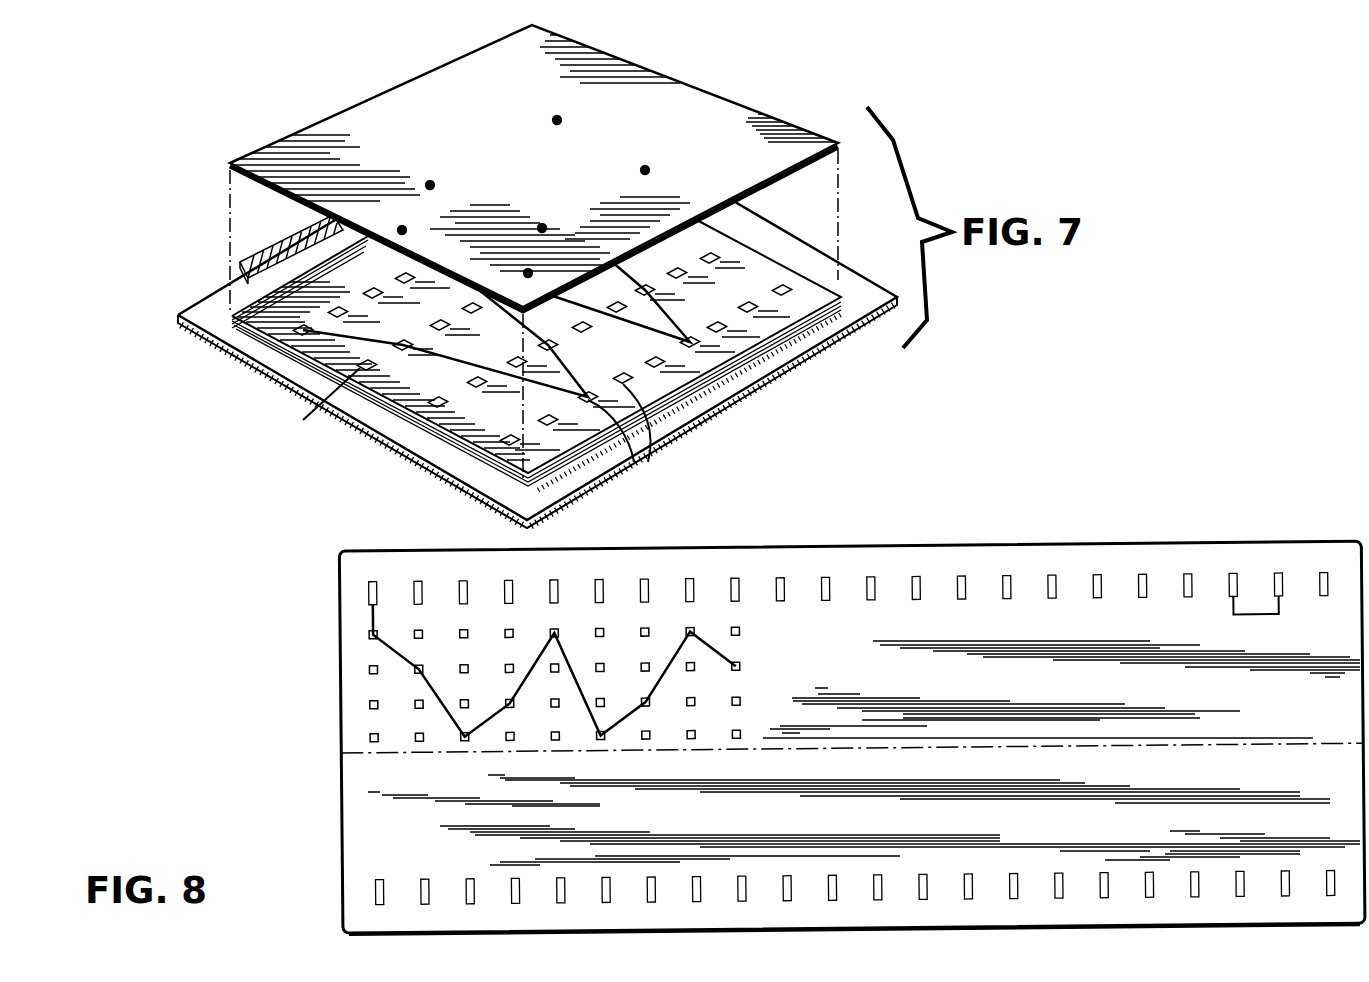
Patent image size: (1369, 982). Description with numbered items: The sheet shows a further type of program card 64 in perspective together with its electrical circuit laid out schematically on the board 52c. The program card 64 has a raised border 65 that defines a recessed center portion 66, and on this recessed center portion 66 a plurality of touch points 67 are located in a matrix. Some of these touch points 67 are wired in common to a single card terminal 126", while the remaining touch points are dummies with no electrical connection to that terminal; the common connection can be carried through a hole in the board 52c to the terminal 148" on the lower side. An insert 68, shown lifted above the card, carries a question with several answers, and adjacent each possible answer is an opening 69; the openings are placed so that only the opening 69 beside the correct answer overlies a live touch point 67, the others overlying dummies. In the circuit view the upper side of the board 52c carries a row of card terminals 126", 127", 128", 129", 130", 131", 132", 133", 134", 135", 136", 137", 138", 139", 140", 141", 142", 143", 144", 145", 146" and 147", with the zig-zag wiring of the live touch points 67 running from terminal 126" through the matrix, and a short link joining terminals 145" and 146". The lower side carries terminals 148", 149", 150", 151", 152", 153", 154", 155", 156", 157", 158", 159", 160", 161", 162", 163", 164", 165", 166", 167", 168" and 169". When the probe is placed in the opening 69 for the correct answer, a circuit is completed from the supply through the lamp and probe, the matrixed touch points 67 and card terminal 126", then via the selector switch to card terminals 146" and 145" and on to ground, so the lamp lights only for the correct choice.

In FIG. 8, the board 52c is at (1148, 519).
In FIG. 7, the program card 64 is at (748, 418).
In FIG. 7, the raised border 65 is at (768, 363).
In FIG. 7, the recessed center portion 66 is at (737, 280).
In FIG. 7, the touch points 67 is at (432, 407).
In FIG. 8, the touch points 67 is at (350, 686).
In FIG. 7, the insert 68 is at (748, 82).
In FIG. 7, the opening 69 is at (402, 228).
In FIG. 7, the card terminal 126 is at (254, 262).
In FIG. 8, the card terminal 126 is at (372, 583).
In FIG. 8, the slot 127 is at (418, 582).
In FIG. 8, the slot 128 is at (463, 582).
In FIG. 8, the slot 129 is at (508, 581).
In FIG. 8, the slot 130 is at (554, 581).
In FIG. 8, the slot 131 is at (599, 580).
In FIG. 8, the slot 132 is at (644, 580).
In FIG. 8, the slot 133 is at (689, 579).
In FIG. 8, the slot 134 is at (735, 579).
In FIG. 8, the slot 135 is at (780, 579).
In FIG. 8, the slot 136 is at (825, 578).
In FIG. 8, the slot 137 is at (871, 578).
In FIG. 8, the slot 138 is at (916, 577).
In FIG. 8, the slot 139 is at (961, 577).
In FIG. 8, the slot 140 is at (1007, 576).
In FIG. 8, the slot 141 is at (1052, 576).
In FIG. 8, the slot 142 is at (1097, 576).
In FIG. 8, the slot 143 is at (1142, 575).
In FIG. 8, the slot 144 is at (1188, 575).
In FIG. 8, the card terminal 145 is at (1233, 574).
In FIG. 8, the card terminal 146 is at (1278, 574).
In FIG. 8, the slot 147 is at (1324, 573).
In FIG. 8, the terminal 148 is at (385, 902).
In FIG. 8, the slot 149 is at (431, 902).
In FIG. 8, the slot 150 is at (476, 902).
In FIG. 8, the slot 151 is at (521, 901).
In FIG. 8, the slot 152 is at (567, 901).
In FIG. 8, the slot 153 is at (612, 900).
In FIG. 8, the slot 154 is at (657, 900).
In FIG. 8, the slot 155 is at (702, 899).
In FIG. 8, the slot 156 is at (748, 899).
In FIG. 8, the slot 157 is at (793, 898).
In FIG. 8, the slot 158 is at (838, 898).
In FIG. 8, the slot 159 is at (884, 898).
In FIG. 8, the slot 160 is at (929, 897).
In FIG. 8, the slot 161 is at (974, 897).
In FIG. 8, the slot 162 is at (1019, 896).
In FIG. 8, the slot 163 is at (1065, 896).
In FIG. 8, the slot 164 is at (1110, 895).
In FIG. 8, the slot 165 is at (1155, 895).
In FIG. 8, the slot 166 is at (1201, 895).
In FIG. 8, the slot 167 is at (1246, 894).
In FIG. 8, the slot 168 is at (1291, 894).
In FIG. 8, the slot 169 is at (1336, 893).